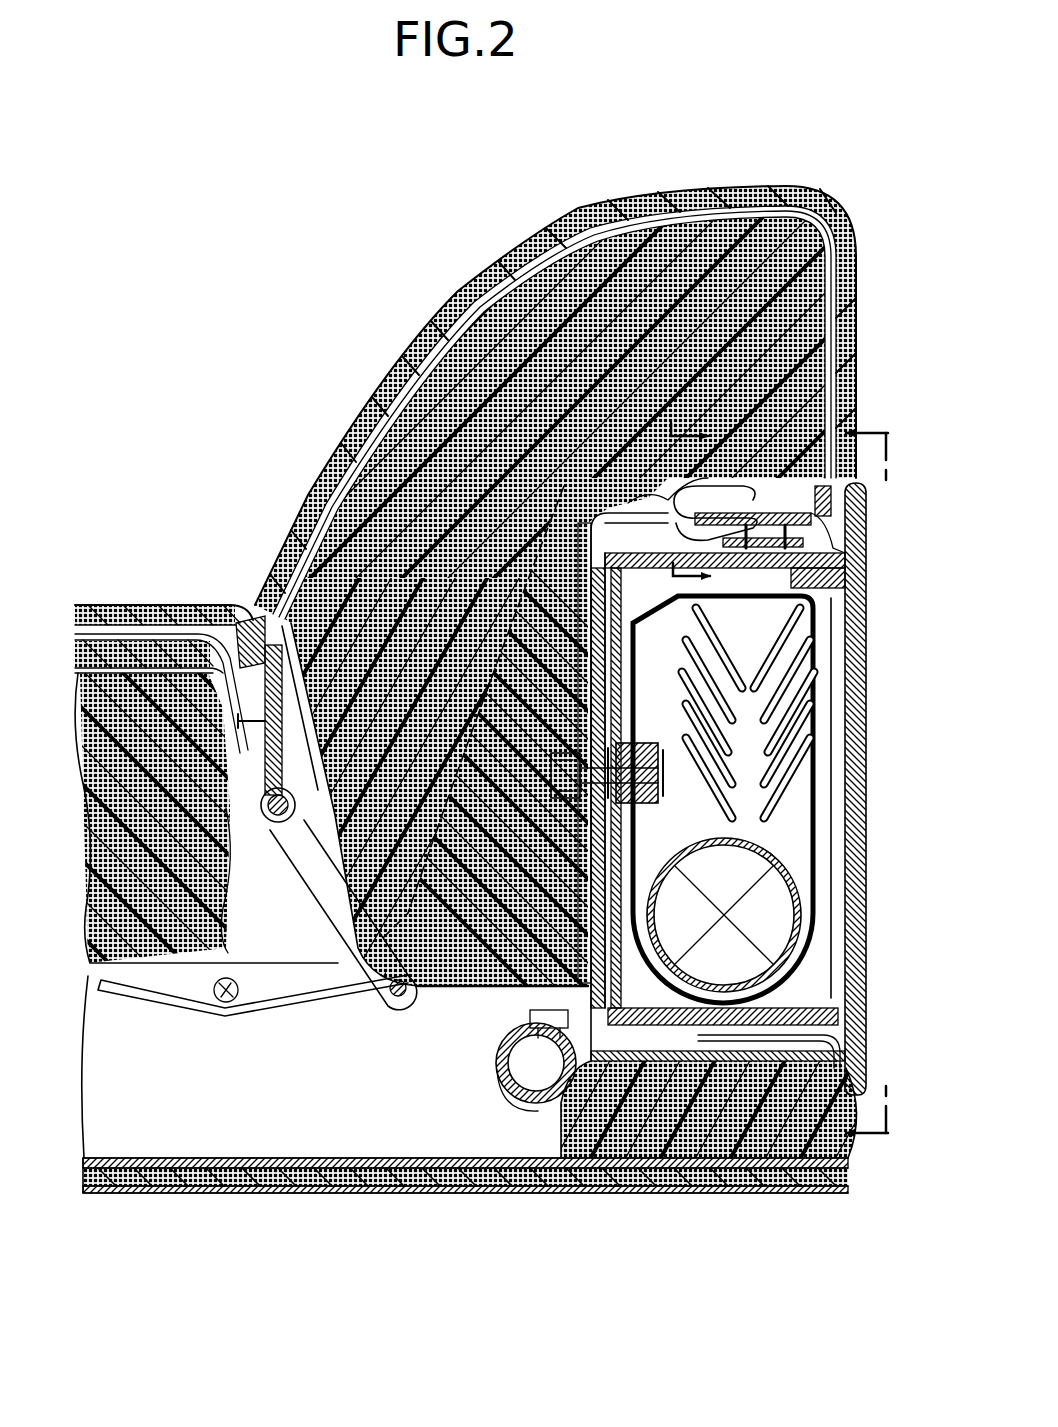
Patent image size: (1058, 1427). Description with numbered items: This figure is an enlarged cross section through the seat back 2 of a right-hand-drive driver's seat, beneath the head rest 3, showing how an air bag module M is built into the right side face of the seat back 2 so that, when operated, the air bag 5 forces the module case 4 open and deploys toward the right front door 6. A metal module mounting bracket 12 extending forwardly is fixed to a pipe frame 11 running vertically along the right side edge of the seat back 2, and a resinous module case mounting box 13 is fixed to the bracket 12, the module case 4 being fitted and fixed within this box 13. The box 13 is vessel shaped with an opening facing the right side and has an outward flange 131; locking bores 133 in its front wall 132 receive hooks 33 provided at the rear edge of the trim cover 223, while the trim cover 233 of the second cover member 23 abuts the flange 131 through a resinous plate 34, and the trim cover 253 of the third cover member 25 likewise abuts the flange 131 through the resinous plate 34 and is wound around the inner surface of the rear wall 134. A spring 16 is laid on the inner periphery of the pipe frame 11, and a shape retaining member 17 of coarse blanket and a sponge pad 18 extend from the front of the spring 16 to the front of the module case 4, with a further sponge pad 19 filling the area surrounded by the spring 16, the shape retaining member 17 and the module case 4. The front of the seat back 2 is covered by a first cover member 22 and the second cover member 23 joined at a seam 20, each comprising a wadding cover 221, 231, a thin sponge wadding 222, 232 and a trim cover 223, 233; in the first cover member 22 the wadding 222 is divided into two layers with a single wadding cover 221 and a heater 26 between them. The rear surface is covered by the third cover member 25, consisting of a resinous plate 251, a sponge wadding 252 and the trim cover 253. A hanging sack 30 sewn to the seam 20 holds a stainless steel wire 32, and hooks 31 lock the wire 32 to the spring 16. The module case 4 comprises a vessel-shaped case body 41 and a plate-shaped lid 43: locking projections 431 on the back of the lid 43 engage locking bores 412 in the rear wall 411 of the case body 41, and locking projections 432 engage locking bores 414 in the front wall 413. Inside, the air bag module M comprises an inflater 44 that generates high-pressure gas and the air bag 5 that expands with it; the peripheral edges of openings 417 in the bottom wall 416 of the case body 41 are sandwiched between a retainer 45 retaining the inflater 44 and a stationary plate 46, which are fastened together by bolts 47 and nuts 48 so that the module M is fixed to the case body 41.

The seat back 2 is at (150, 492).
The head rest 3 is at (870, 781).
The module case 4 is at (860, 738).
The air bag 5 is at (808, 621).
The right front door 6 is at (659, 508).
The pipe frame 11 is at (486, 1046).
The module mounting bracket 12 is at (580, 885).
The module case mounting box 13 is at (614, 1100).
The flange 131 is at (788, 1120).
The front wall 132 is at (742, 470).
The locking bores 133 is at (620, 490).
The rear wall 134 is at (645, 1062).
The spring 16 is at (268, 1003).
The shape retaining member 17 is at (458, 666).
The pad 18 is at (529, 717).
The pad 19 is at (494, 738).
The seam 20 is at (243, 588).
The first cover member 22 is at (158, 593).
The wadding cover 221 is at (196, 624).
The wadding 222 is at (108, 630).
The trim cover 223 is at (135, 596).
The second cover member 23 is at (530, 213).
The wadding cover 231 is at (372, 414).
The wadding 232 is at (450, 290).
The trim cover 233 is at (368, 372).
The third cover member 25 is at (294, 1190).
The resinous plate 251 is at (168, 1150).
The wadding 252 is at (350, 1150).
The trim cover 253 is at (403, 1188).
The heater 26 is at (202, 706).
The hanging sack 30 is at (252, 792).
The hooks 31 is at (336, 930).
The wire 32 is at (300, 838).
The hooks 33 is at (700, 478).
The resinous plate 34 is at (842, 523).
The case body 41 is at (575, 918).
The rear wall 411 is at (657, 1000).
The locking bores 412 is at (763, 973).
The front wall 413 is at (597, 500).
The locking bores 414 is at (748, 705).
The bottom wall 416 is at (582, 593).
The openings 417 is at (583, 868).
The lid 43 is at (862, 808).
The locking projections 431 is at (678, 1062).
The locking projections 432 is at (810, 491).
The inflater 44 is at (724, 915).
The retainer 45 is at (680, 833).
The stationary plate 46 is at (572, 716).
The bolts 47 is at (632, 760).
The nuts 48 is at (545, 776).
The air bag module M is at (828, 791).